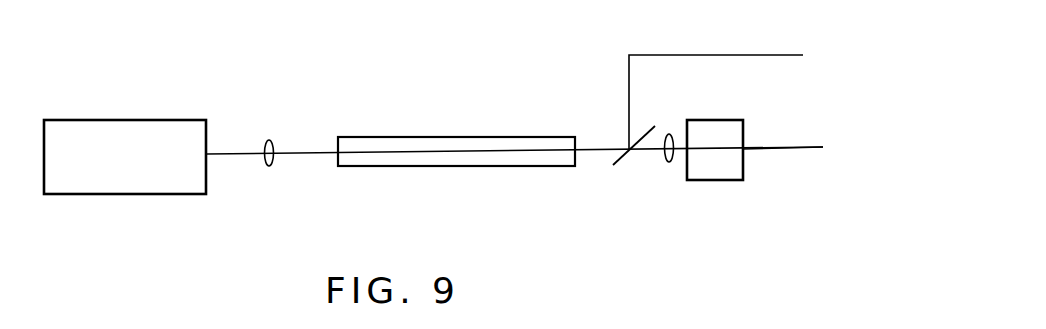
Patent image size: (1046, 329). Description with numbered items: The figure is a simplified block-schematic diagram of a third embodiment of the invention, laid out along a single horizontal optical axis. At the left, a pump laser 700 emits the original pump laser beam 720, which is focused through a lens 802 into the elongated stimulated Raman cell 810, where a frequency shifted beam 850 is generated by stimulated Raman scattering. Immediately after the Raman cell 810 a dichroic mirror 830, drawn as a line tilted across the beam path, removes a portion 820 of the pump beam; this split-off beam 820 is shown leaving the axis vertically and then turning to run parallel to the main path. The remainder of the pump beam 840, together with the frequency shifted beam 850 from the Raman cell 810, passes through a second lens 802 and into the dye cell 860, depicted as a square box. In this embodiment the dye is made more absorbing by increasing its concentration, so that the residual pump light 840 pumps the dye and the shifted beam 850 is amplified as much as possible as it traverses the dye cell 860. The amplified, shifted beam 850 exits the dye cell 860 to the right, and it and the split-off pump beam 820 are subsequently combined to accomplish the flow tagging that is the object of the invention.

The pump laser 700 is at (110, 195).
The pump laser beam 720 is at (310, 154).
The lens 802 is at (268, 141).
The stimulated Raman cell 810 is at (362, 141).
The split-off portion of the pump laser beam 820 is at (628, 60).
The dichroic mirror 830 is at (615, 166).
The remainder of the pump beam 840 is at (652, 147).
The frequency shifted beam 850 is at (652, 149).
The dye cell 860 is at (732, 130).